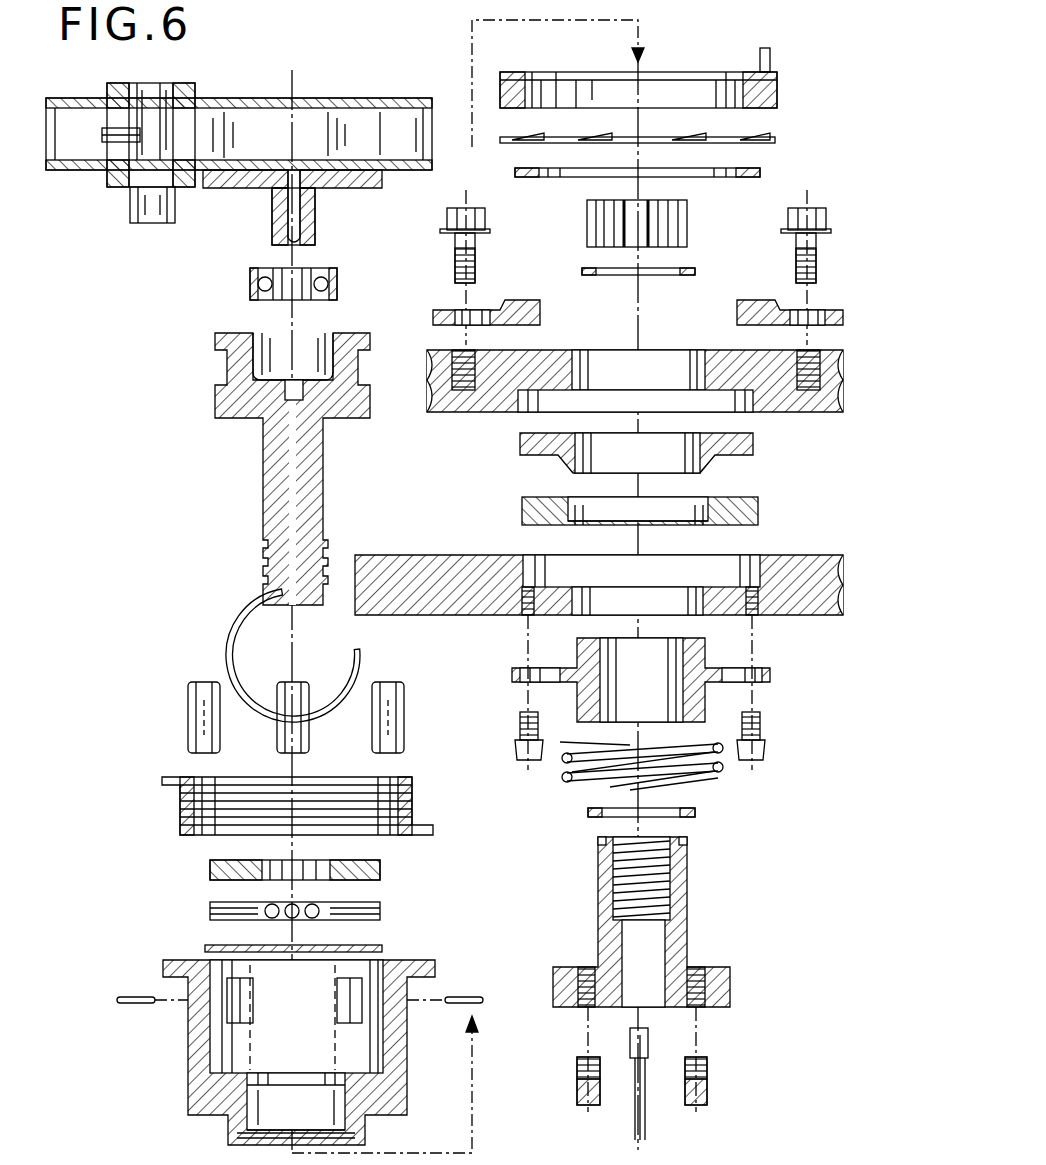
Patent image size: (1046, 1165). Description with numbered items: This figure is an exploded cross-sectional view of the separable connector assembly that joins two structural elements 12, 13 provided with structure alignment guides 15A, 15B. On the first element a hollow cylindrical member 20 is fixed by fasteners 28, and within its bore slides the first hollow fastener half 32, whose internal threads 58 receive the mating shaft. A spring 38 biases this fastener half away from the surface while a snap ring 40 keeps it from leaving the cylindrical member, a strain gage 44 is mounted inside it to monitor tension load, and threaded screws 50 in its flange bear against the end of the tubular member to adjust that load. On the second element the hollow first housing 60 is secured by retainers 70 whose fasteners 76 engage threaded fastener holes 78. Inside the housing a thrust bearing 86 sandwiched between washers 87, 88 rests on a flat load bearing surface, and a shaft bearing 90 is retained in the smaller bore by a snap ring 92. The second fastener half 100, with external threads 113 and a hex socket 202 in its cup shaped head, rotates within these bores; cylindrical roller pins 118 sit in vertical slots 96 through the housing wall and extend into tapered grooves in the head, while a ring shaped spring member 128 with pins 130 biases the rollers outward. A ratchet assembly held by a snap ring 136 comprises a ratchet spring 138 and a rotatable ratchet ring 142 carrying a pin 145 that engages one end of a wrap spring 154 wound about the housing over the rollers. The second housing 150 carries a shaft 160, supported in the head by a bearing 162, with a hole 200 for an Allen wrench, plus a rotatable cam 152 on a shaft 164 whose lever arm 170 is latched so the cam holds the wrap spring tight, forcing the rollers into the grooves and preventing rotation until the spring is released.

The structural element 12 is at (432, 555).
The structural element 13 is at (797, 412).
The structure alignment guide 15A is at (522, 505).
The structure alignment guide 15B is at (520, 445).
The hollow cylindrical member 20 is at (512, 675).
The fasteners 28 is at (515, 750).
The first hollow fastener half 32 is at (687, 915).
The spring 38 is at (567, 782).
The snap ring 40 is at (695, 812).
The strain gage 44 is at (648, 1040).
The threaded screws 50 is at (588, 1106).
The internal threads 58 is at (650, 845).
The first housing 60 is at (188, 1077).
The retainers 70 is at (442, 310).
The fasteners 76 is at (462, 208).
The threaded fastener holes 78 is at (470, 350).
The thrust bearing 86 is at (212, 911).
The washer 87 is at (207, 947).
The washer 88 is at (210, 870).
The shaft bearing 90 is at (587, 220).
The snap ring 92 is at (582, 271).
The vertical slots 96 is at (355, 988).
The second fastener half 100 is at (263, 500).
The external threads 113 is at (265, 565).
The cylindrical roller pins 118 is at (188, 712).
The ring shaped spring member 128 is at (228, 638).
The pins 130 is at (136, 1004).
The snap ring 136 is at (700, 177).
The ratchet spring 138 is at (758, 141).
The rotatable ratchet ring 142 is at (560, 72).
The pin 145 is at (760, 56).
The second housing 150 is at (357, 96).
The rotatable cam 152 is at (138, 225).
The wrap spring 154 is at (180, 807).
The shaft 160 is at (315, 226).
The bearing 162 is at (250, 290).
The shaft 164 is at (185, 143).
The lever arm 170 is at (96, 135).
The hole 200 is at (287, 230).
The hex socket 202 is at (253, 372).